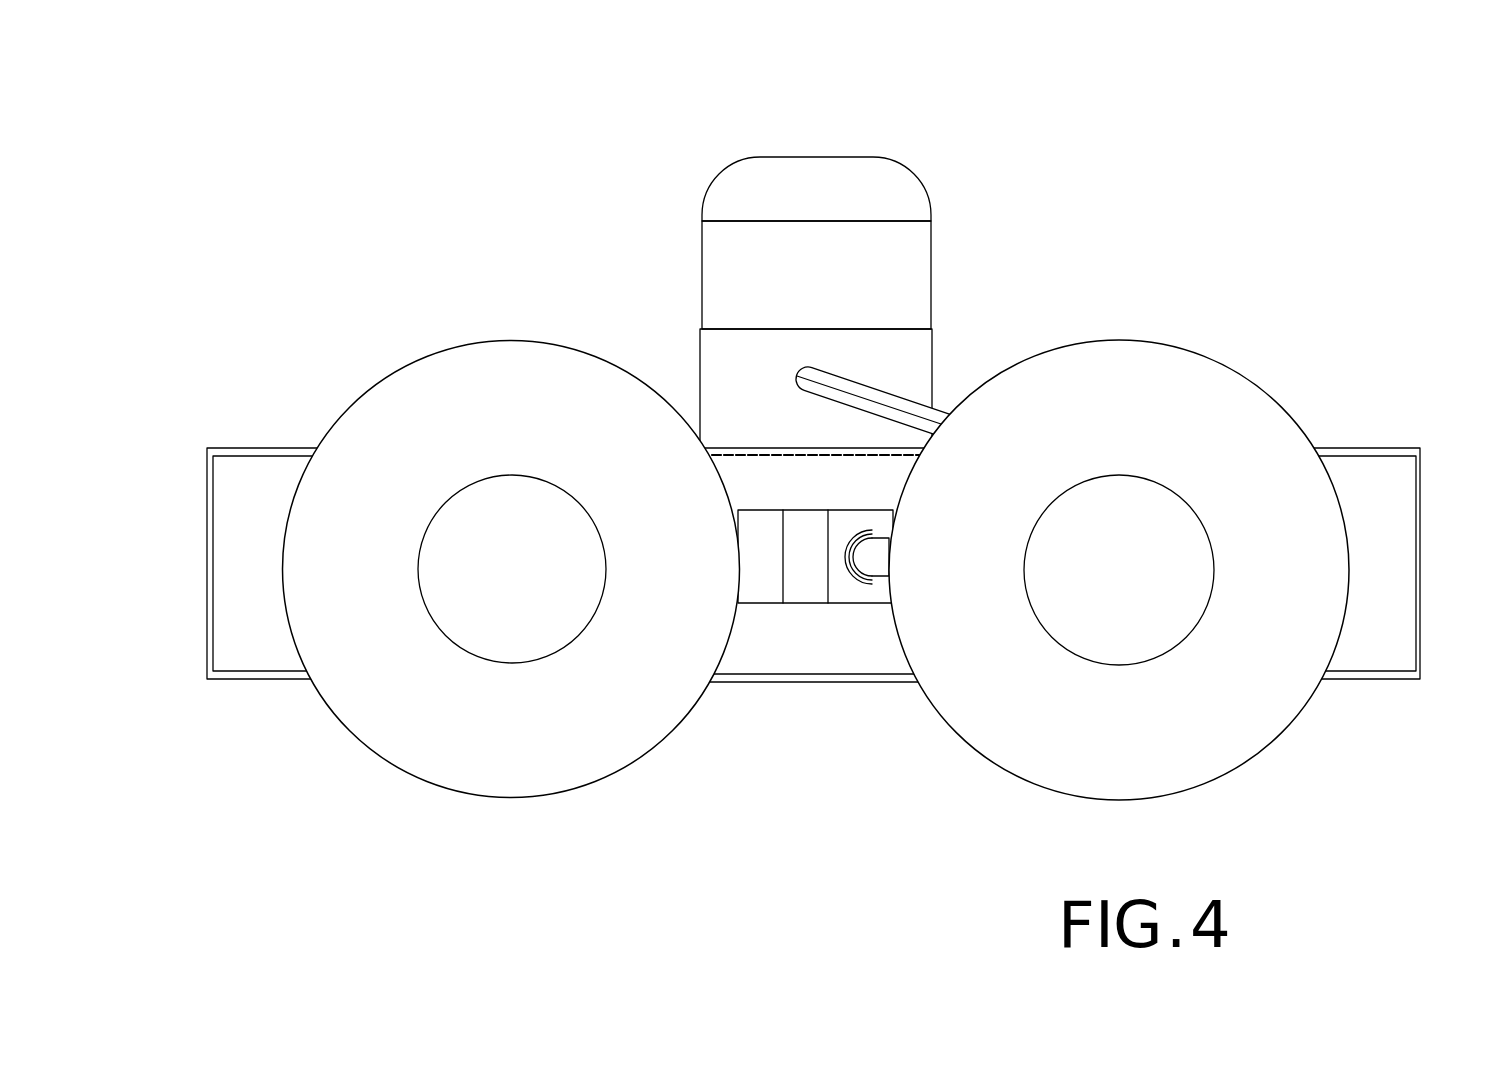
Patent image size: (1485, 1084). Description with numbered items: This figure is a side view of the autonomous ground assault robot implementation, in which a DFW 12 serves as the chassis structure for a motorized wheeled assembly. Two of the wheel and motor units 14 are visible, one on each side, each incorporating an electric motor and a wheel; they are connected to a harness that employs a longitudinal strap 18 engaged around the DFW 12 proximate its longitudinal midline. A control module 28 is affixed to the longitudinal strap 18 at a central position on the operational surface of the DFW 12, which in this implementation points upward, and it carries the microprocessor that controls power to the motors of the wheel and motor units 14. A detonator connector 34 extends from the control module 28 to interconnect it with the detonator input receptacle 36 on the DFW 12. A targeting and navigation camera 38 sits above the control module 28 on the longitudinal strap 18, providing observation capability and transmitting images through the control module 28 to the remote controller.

The DFW 12 is at (277, 630).
The wheel and motor unit 14 is at (410, 363).
The longitudinal strap 18 is at (1352, 447).
The control module 28 is at (743, 330).
The detonator connector 34 is at (893, 400).
The detonator input receptacle 36 is at (867, 583).
The targeting and navigation camera 38 is at (780, 175).